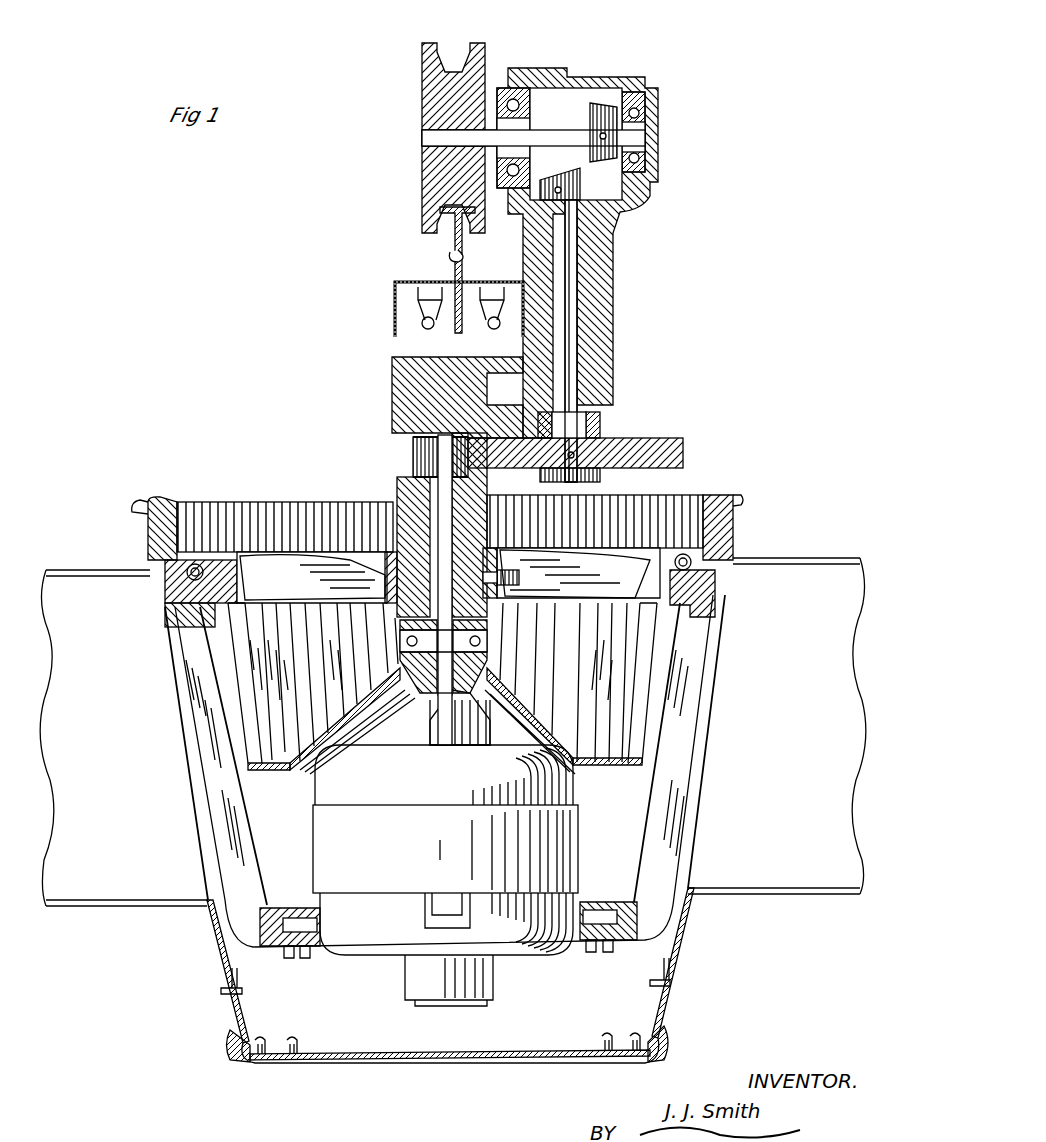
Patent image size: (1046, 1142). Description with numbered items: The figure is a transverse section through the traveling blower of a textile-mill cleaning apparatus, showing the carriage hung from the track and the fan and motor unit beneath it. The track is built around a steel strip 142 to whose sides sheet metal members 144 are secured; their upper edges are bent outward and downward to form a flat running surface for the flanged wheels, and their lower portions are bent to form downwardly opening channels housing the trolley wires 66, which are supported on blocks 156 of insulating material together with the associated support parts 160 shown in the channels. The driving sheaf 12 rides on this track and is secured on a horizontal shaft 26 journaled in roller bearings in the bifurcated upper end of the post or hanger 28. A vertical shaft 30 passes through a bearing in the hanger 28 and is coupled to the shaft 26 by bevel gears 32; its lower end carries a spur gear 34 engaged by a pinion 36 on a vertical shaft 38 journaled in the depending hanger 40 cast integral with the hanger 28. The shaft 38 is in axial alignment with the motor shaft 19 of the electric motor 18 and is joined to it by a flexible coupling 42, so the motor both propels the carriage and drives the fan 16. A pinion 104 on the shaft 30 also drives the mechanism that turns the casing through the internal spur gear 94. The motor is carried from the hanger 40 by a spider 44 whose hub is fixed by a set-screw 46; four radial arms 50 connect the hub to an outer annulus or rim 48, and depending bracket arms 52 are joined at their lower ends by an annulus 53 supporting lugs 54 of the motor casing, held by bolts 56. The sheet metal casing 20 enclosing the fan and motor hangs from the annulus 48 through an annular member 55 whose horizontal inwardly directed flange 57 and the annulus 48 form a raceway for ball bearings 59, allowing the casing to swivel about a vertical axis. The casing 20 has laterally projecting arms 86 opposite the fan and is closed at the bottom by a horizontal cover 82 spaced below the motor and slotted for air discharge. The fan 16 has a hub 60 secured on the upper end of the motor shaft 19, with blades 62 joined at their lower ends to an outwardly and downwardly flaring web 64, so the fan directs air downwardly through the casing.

The flanged wheel or sheaf 12 is at (428, 184).
The horizontal shaft 26 is at (424, 134).
The post or hanger 28 is at (614, 274).
The vertical shaft 30 is at (573, 318).
The bevel gears 32 is at (566, 138).
The spur gear 34 is at (686, 445).
The pinion 36 is at (416, 456).
The vertical shaft 38 is at (440, 515).
The depending post or hanger 40 is at (400, 540).
The flexible coupling 42 is at (390, 578).
The spider 44 is at (285, 555).
The set-screw 46 is at (515, 578).
The outer annulus or rim 48 is at (715, 597).
The radial arms 50 is at (610, 560).
The depending bracket arms 52 is at (200, 747).
The annulus 53 is at (272, 948).
The lugs 54 is at (300, 916).
The annular member 55 is at (165, 500).
The bolts 56 is at (300, 960).
The horizontal inwardly directed flange 57 is at (692, 545).
The ball bearings 59 is at (190, 578).
The fan hub 60 is at (472, 690).
The blades 62 is at (300, 676).
The outwardly and downwardly flaring web 64 is at (308, 772).
The trolley wires 66 is at (424, 328).
The horizontal cover 82 is at (360, 1062).
The laterally projecting arms 86 is at (66, 578).
The internal spur gear 94 is at (215, 522).
The pinion 104 is at (600, 425).
The steel strip 142 is at (452, 325).
The sheet metal members 144 is at (455, 258).
The block of insulating material 156 is at (430, 295).
The bracket 160 is at (425, 318).
The fan 16 is at (650, 715).
The electric motor 18 is at (590, 858).
The motor shaft 19 is at (440, 700).
The sheet metal casing 20 is at (700, 918).